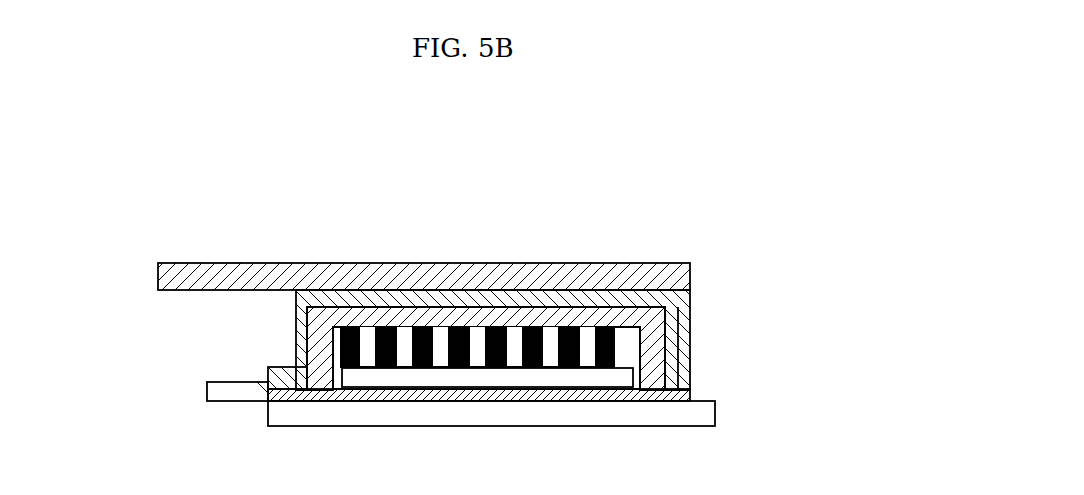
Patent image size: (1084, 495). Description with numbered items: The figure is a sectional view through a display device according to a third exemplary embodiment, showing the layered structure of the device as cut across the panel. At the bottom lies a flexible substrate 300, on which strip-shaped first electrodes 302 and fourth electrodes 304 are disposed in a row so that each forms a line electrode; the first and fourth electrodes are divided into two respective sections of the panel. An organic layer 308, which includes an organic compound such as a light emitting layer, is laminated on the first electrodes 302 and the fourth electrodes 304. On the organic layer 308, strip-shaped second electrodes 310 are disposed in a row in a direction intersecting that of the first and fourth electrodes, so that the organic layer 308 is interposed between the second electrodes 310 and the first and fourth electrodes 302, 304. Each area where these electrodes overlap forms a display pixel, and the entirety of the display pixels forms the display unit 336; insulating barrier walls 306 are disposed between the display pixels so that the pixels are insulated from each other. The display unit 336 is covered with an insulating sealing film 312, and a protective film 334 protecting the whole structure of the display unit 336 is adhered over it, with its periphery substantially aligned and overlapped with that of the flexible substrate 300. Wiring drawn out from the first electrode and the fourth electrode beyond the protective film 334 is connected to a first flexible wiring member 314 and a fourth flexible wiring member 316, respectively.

The flexible substrate 300 is at (712, 411).
The first electrode 302 is at (292, 368).
The fourth electrode 304 is at (688, 395).
The insulating barrier wall 306 is at (474, 342).
The organic layer 308 is at (618, 380).
The second electrode 310 is at (616, 342).
The insulating sealing film 312 is at (686, 300).
The first flexible wiring member 314 is at (207, 390).
The fourth flexible wiring member 316 is at (542, 278).
The protective film 334 is at (643, 297).
The display unit 336 is at (850, 278).